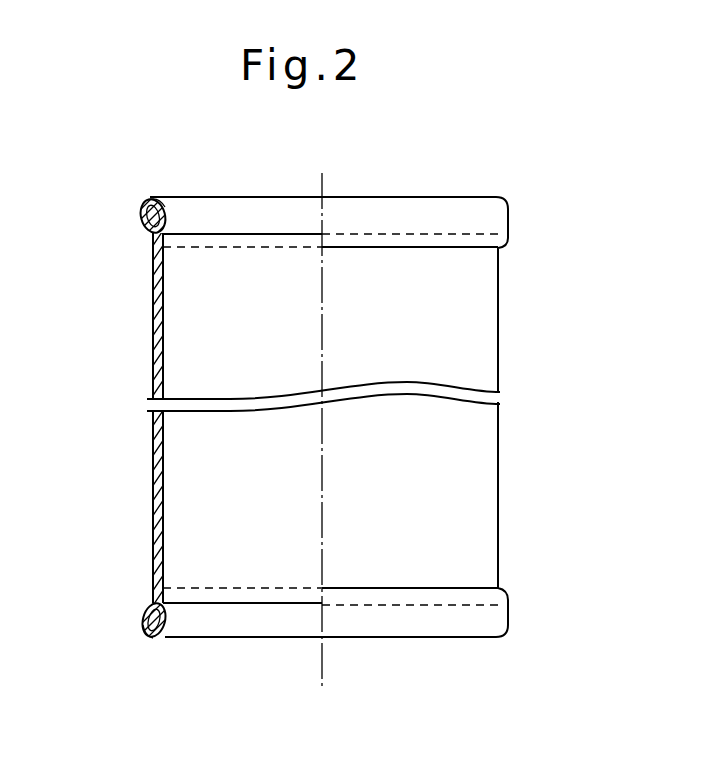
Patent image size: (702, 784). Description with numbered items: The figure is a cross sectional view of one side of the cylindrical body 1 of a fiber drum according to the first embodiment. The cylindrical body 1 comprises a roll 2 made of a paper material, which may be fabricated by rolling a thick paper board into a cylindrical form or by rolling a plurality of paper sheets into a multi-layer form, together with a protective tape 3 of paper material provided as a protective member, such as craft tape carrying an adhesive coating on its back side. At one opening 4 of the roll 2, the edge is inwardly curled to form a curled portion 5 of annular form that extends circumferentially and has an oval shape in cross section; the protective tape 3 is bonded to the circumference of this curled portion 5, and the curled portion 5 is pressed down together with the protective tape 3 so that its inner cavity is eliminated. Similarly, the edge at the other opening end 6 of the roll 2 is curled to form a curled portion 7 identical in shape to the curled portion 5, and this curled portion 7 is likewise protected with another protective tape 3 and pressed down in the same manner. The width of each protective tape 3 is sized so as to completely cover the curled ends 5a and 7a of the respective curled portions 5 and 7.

The cylindrical body 1 is at (529, 352).
The roll 2 is at (473, 503).
The protective tape 3 is at (148, 232).
The opening 4 is at (390, 182).
The curled portion 5 is at (143, 215).
The curled end 5a is at (148, 201).
The other opening end 6 is at (417, 653).
The curled portion 7 is at (160, 637).
The curled end 7a is at (147, 638).